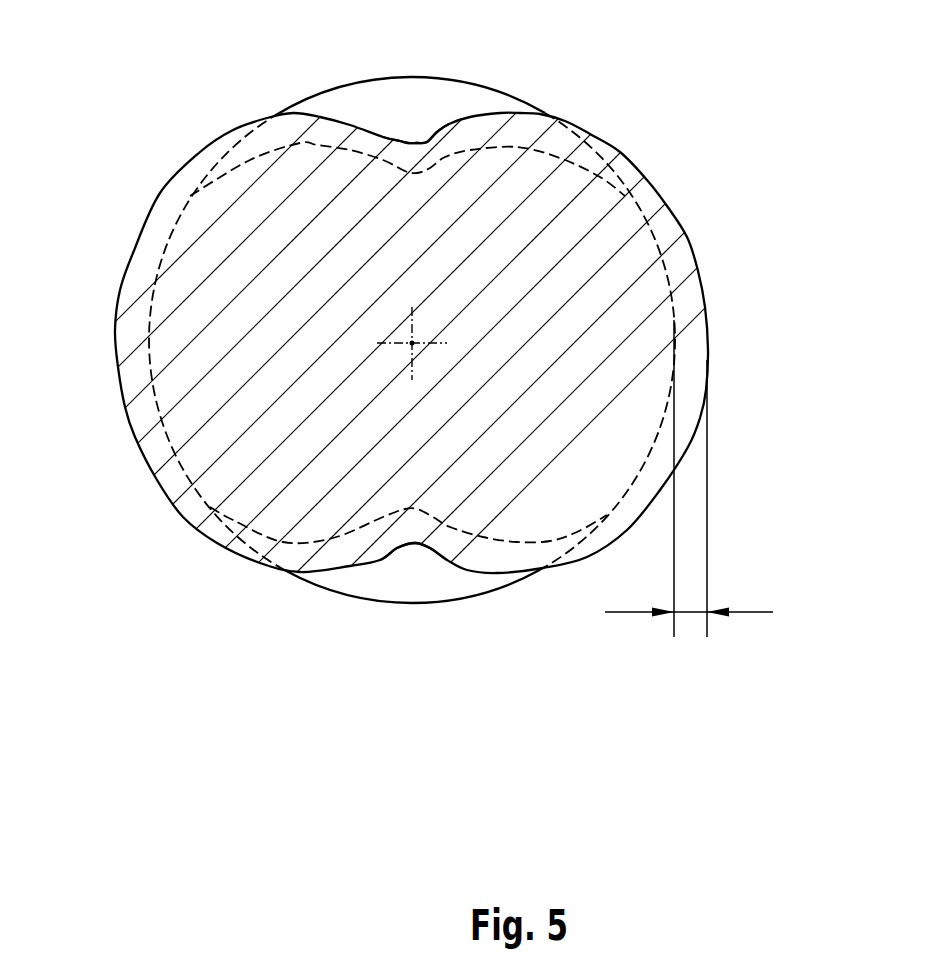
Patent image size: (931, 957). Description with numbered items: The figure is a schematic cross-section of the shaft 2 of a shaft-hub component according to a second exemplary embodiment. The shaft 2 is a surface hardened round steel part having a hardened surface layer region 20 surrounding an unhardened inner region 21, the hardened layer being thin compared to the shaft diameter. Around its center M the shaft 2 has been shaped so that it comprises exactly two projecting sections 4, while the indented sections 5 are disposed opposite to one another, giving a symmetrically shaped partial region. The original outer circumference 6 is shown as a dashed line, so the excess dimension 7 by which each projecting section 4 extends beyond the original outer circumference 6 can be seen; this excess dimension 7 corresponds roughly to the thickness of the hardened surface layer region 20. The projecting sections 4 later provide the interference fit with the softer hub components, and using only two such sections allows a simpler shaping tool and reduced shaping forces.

The shaft 2 is at (724, 109).
The projecting section 4 is at (703, 285).
The indented section 5 is at (413, 143).
The original outer circumference 6 is at (497, 90).
The excess dimension 7 is at (690, 613).
The hardened surface layer region 20 is at (337, 133).
The unhardened inner region 21 is at (300, 213).
The center M is at (412, 343).